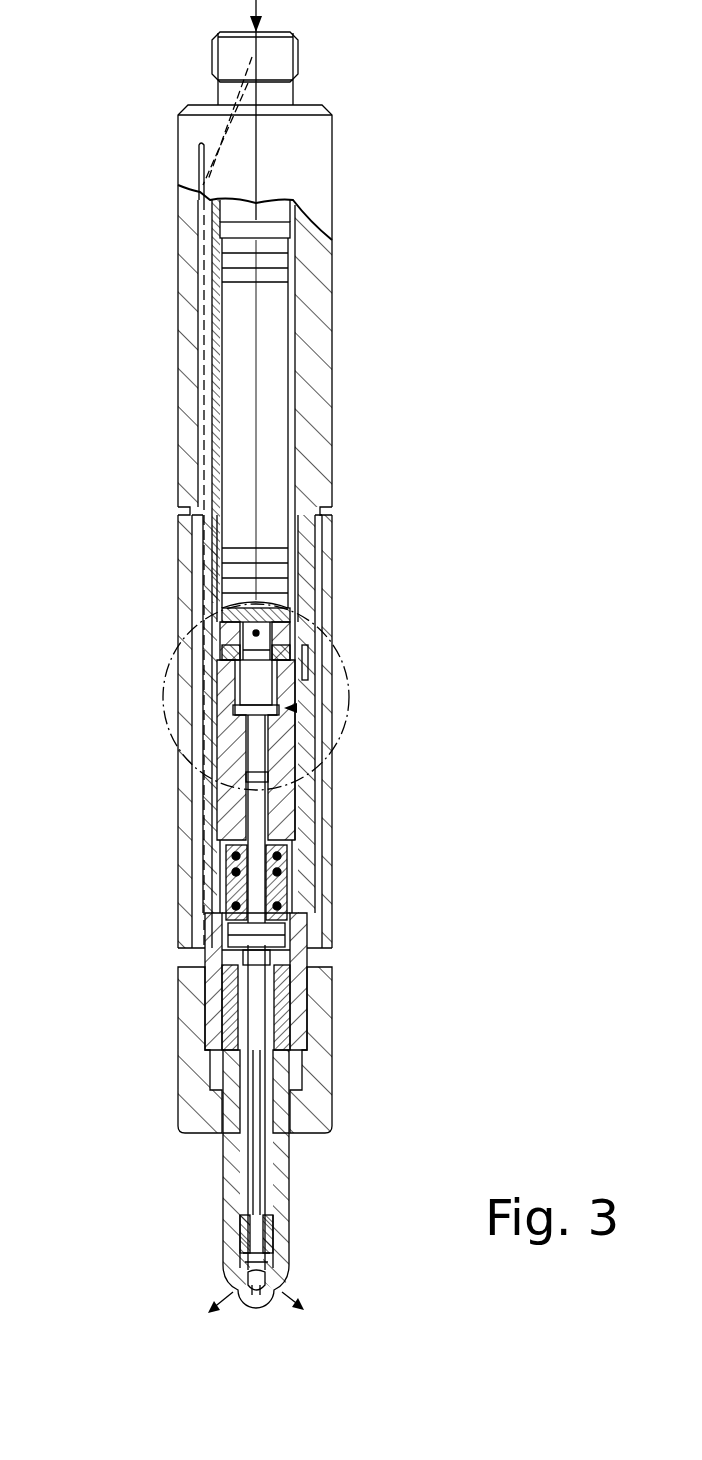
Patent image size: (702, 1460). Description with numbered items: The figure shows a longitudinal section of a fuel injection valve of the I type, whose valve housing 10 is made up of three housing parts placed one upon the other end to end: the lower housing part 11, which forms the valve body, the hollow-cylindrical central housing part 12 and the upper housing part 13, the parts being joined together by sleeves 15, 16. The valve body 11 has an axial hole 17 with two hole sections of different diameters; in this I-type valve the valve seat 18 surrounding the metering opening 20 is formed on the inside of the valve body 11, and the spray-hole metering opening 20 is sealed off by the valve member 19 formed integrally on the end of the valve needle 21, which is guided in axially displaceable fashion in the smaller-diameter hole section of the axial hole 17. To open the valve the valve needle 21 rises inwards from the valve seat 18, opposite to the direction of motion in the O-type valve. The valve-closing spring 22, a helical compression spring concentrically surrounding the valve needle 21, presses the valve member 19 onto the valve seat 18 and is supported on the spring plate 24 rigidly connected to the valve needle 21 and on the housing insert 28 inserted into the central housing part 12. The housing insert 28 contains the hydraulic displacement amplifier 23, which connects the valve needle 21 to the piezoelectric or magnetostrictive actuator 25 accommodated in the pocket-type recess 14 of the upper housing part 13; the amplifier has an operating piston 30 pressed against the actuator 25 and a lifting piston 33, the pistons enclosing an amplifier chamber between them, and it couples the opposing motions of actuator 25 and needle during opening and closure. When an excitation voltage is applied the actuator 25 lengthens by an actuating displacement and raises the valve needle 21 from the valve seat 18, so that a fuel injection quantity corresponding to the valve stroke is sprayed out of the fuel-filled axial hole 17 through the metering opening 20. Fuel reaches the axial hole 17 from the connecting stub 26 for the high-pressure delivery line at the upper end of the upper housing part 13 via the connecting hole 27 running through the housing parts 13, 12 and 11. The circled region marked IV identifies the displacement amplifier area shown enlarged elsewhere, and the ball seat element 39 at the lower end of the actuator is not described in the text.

The housing 10 is at (338, 284).
The lower housing part 11 is at (313, 1070).
The central housing part 12 is at (302, 798).
The upper housing part 13 is at (308, 473).
The pocket-type recess 14 is at (282, 210).
The sleeve 15 is at (324, 1010).
The sleeve 16 is at (330, 900).
The axial hole 17 is at (245, 1135).
The valve seat 18 is at (243, 1284).
The valve member 19 is at (243, 1268).
The metering opening 20 is at (237, 1290).
The valve needle 21 is at (262, 1172).
The valve-closing spring 22 is at (290, 870).
The displacement amplifier 23 is at (296, 708).
The spring plate 24 is at (283, 935).
The actuator 25 is at (265, 378).
The connecting stub 26 is at (282, 53).
The connecting hole 27 is at (190, 283).
The housing insert 28 is at (323, 742).
The operating piston 30 is at (227, 660).
The lifting piston 33 is at (227, 782).
The valve ball seat 39 is at (296, 602).
The detail IV circle IV is at (342, 653).